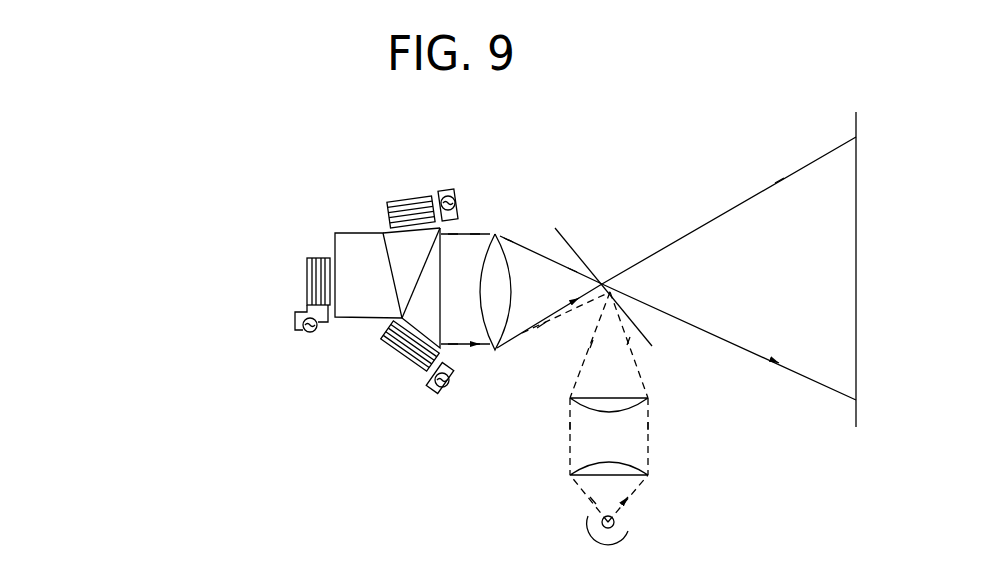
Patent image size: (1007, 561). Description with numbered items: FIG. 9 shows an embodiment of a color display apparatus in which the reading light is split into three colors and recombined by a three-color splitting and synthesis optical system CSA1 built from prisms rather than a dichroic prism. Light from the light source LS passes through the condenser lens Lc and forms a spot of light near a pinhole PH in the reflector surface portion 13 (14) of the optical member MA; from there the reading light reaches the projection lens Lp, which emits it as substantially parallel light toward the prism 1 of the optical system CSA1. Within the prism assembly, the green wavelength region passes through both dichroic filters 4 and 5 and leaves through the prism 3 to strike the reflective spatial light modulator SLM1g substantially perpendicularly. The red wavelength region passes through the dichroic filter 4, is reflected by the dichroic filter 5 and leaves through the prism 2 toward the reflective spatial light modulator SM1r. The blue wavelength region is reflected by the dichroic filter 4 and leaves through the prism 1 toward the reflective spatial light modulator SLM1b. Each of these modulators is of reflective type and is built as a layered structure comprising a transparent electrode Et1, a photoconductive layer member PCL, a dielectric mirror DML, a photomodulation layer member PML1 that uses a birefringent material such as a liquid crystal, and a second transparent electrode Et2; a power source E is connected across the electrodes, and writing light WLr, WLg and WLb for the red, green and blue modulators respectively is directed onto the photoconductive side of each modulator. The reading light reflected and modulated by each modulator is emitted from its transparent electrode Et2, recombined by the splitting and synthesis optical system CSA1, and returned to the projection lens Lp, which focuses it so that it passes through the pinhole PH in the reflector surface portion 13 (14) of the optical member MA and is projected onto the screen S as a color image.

The prism 1 is at (441, 312).
The prism 2 is at (383, 233).
The prism 3 is at (337, 233).
The dichroic filter 4 is at (441, 256).
The dichroic filter 5 is at (378, 273).
The reflector surface portion 13 is at (528, 303).
The reflector surface portion 14 is at (495, 292).
The screen S is at (857, 138).
The pinhole PH is at (608, 266).
The projection lens Lp is at (503, 236).
The optical member MA is at (650, 323).
The condenser lens Lc is at (670, 390).
The light source LS is at (628, 527).
The spatial light modulator of reflector type SM1r is at (418, 190).
The spatial light modulator of reflector type SLM1g is at (290, 265).
The spatial light modulator of reflector type SLM1b is at (412, 370).
The writing light (red) WLr is at (407, 185).
The writing light (green) WLg is at (291, 283).
The writing light (blue) WLb is at (400, 364).
The power source E is at (303, 328).
The transparent electrode Et1 is at (471, 147).
The transparent electrode Et2 is at (472, 215).
The photoconductive layer member PCL is at (311, 257).
The dielectric mirror DML is at (316, 256).
The photomodulation layer member PML1 is at (399, 334).
The 3-color splitting and synthesis optical system CSA1 is at (335, 328).